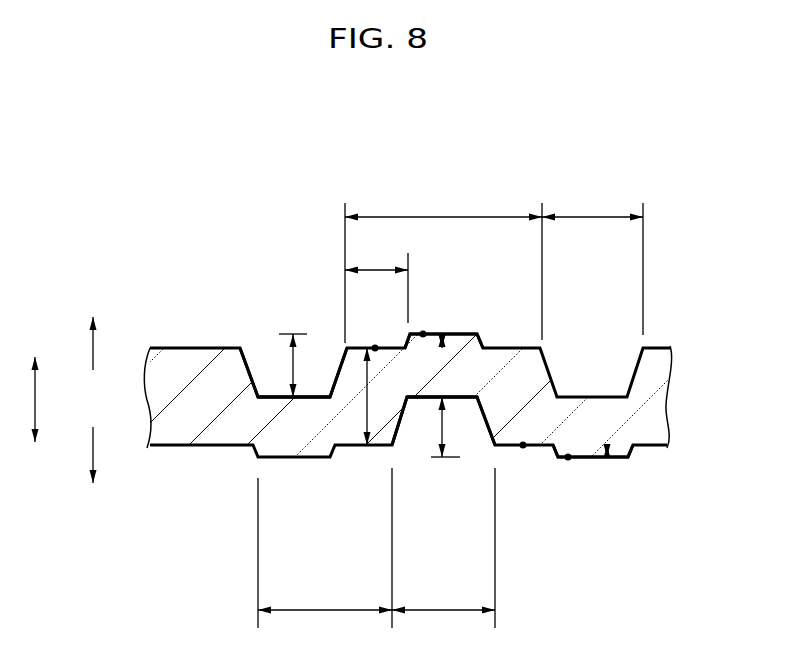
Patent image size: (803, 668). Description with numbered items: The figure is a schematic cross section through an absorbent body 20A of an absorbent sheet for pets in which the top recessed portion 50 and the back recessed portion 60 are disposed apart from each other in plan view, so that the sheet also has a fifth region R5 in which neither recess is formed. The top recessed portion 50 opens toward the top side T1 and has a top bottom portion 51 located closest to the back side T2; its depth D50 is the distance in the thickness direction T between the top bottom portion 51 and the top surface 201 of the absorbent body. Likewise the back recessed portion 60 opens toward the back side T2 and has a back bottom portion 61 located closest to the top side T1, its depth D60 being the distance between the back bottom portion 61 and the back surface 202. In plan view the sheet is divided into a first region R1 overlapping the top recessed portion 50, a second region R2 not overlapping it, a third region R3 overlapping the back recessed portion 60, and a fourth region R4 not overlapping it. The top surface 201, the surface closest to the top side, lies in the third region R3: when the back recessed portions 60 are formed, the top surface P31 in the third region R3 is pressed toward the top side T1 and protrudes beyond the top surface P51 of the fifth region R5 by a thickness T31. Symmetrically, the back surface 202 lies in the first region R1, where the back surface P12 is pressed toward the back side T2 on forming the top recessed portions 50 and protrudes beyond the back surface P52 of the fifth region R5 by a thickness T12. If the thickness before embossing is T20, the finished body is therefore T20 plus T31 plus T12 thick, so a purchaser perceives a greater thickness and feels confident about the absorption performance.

The absorbent body 20A is at (680, 315).
The top recessed portion 50 is at (323, 353).
The top bottom portion 51 is at (259, 393).
The top surface of the absorbent body in the fifth region P51 is at (375, 348).
The depth of the top recessed portion D50 is at (292, 378).
The top surface 201 is at (448, 336).
The top surface of the absorbent body in the third region P31 is at (423, 334).
The thickness swollen by formation of the back recessed portions T31 is at (443, 341).
The back surface of the absorbent body in the fifth region P52 is at (524, 445).
The first region R1 is at (592, 261).
The second region R2 is at (443, 265).
The fifth region R5 is at (376, 279).
The fourth region R4 is at (325, 548).
The third region R3 is at (443, 548).
The top side T1 is at (71, 343).
The thickness direction T is at (21, 399).
The back side T2 is at (71, 455).
The original thickness of the absorbent body T20 is at (362, 412).
The depth of the back recessed portion D60 is at (440, 418).
The back recessed portion 60 is at (482, 432).
The back bottom portion 61 is at (457, 398).
The back surface of the absorbent body in the first region P12 is at (568, 458).
The back surface 202 is at (597, 458).
The thickness swollen by formation of the top recessed portions T12 is at (633, 453).